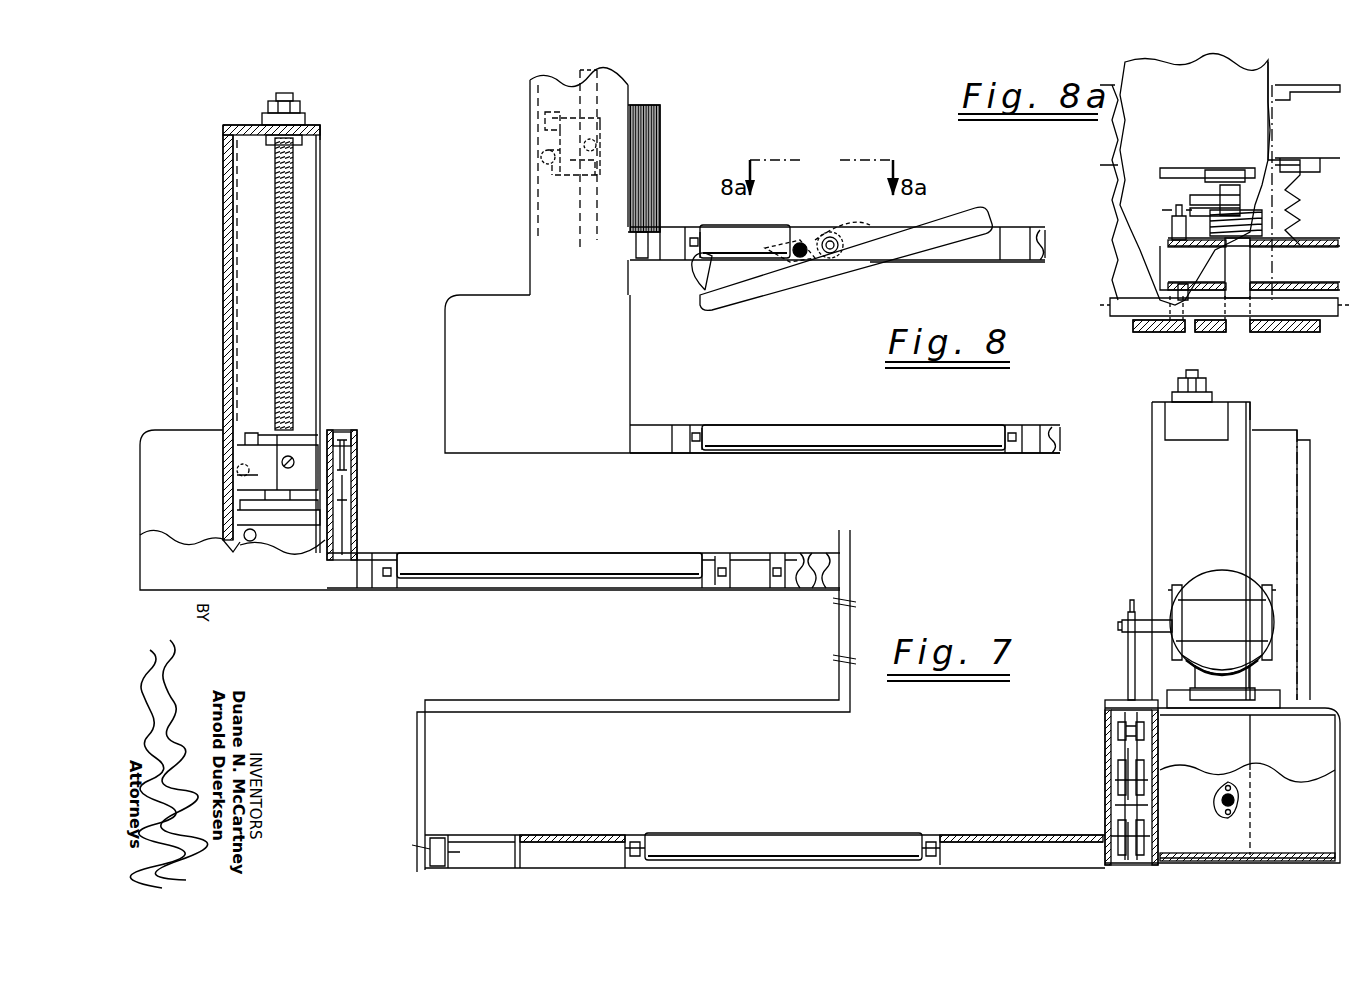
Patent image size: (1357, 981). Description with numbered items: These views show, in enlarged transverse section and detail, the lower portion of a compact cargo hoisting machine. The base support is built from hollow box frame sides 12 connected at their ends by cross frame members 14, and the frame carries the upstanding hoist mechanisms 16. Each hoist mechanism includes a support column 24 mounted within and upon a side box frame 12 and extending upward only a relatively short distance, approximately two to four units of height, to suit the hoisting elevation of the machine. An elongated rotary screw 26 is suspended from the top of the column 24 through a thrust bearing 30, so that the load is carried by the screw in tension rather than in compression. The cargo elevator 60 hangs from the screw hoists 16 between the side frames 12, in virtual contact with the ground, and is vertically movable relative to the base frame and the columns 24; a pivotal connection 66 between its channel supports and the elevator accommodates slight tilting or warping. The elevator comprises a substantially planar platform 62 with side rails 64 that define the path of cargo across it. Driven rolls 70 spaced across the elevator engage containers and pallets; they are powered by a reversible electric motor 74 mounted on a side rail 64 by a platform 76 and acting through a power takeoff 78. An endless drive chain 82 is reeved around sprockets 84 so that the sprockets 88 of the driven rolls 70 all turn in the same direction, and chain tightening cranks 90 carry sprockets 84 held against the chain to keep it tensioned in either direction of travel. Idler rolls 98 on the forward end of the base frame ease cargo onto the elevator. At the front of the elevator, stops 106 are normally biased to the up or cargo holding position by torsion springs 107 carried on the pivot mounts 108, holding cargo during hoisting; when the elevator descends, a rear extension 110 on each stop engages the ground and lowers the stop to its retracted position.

In FIG. 7, the hollow box frame side 12 is at (142, 432).
In FIG. 8, the hollow box frame side 12 is at (445, 368).
In FIG. 7, the cross frame member 14 is at (742, 553).
In FIG. 8, the cross frame member 14 is at (1036, 425).
In FIG. 7, the hoist mechanism 16 is at (334, 134).
In FIG. 7, the support column 24 is at (232, 312).
In FIG. 8, the support column 24 is at (580, 266).
In FIG. 7, the rotary screw 26 is at (296, 312).
In FIG. 8, the rotary screw 26 is at (578, 202).
In FIG. 7, the thrust bearing 30 is at (296, 116).
In FIG. 8, the cargo elevator 60 is at (892, 262).
In FIG. 8, the platform 62 is at (685, 227).
In FIG. 8A, the platform 62 is at (1192, 106).
In FIG. 7, the side rail 64 is at (360, 502).
In FIG. 8, the side rail 64 is at (662, 165).
In FIG. 7, the pivotal connection 66 is at (358, 446).
In FIG. 7, the driven roll 70 is at (882, 835).
In FIG. 7, the electric motor 74 is at (1233, 635).
In FIG. 7, the platform 76 is at (1282, 698).
In FIG. 7, the power takeoff 78 is at (1172, 592).
In FIG. 7, the endless drive chain 82 is at (1128, 664).
In FIG. 7, the sprocket 84 is at (1120, 750).
In FIG. 7, the sprocket 88 is at (1128, 856).
In FIG. 7, the chain tightening crank 90 is at (1120, 770).
In FIG. 7, the idler roll 98 is at (650, 556).
In FIG. 8, the idler roll 98 is at (822, 425).
In FIG. 8, the stop 106 is at (955, 205).
In FIG. 8A, the stop 106 is at (1272, 308).
In FIG. 8, the torsion spring 107 is at (850, 232).
In FIG. 8A, the torsion spring 107 is at (1264, 216).
In FIG. 8, the pivot mount 108 is at (803, 240).
In FIG. 8A, the pivot mount 108 is at (1240, 268).
In FIG. 7, the rear extension 110 is at (1312, 502).
In FIG. 8, the rear extension 110 is at (705, 282).